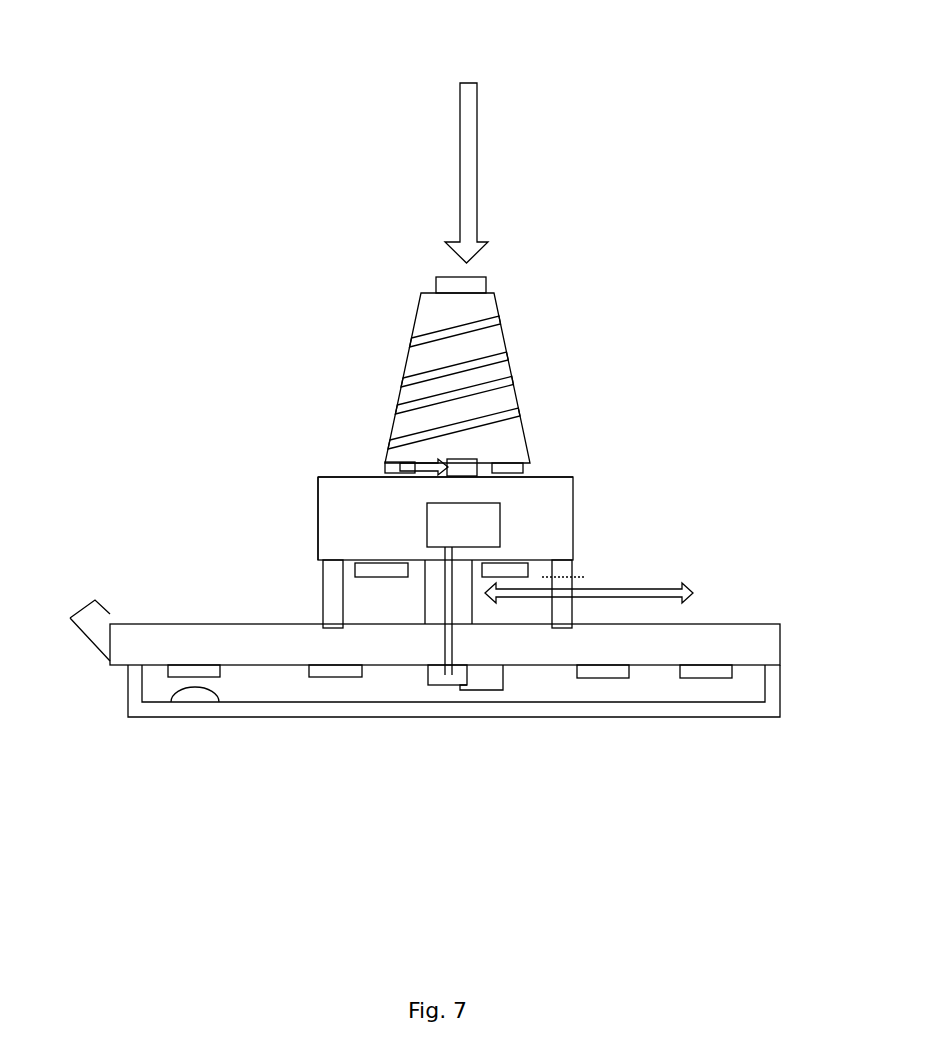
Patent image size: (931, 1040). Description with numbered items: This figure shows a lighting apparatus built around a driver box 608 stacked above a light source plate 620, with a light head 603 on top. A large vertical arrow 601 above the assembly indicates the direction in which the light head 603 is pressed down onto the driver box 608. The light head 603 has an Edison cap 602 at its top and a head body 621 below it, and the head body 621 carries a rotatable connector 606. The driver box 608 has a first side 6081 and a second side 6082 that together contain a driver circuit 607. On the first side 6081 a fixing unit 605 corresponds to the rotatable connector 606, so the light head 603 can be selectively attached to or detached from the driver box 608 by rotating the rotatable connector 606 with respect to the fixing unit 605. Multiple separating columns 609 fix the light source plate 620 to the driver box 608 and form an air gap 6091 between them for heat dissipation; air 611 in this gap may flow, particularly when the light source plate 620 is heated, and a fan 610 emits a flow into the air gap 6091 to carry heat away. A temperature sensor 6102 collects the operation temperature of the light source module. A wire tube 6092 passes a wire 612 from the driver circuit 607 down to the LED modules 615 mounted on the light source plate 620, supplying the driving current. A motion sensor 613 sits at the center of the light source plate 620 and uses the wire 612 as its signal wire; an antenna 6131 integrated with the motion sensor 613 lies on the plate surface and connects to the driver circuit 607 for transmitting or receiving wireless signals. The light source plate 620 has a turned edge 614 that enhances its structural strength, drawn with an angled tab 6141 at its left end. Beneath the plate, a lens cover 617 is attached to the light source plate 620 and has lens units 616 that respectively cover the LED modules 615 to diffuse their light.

The pressing force direction arrow 601 is at (477, 188).
The Edison cap 602 is at (492, 335).
The light head 603 is at (513, 432).
The head body 621 is at (458, 443).
The rotatable connector 606 is at (442, 477).
The fixing unit 605 is at (452, 475).
The driver circuit 607 is at (490, 525).
The driver box 608 is at (330, 485).
The first side 6081 is at (352, 505).
The second side 6082 is at (332, 562).
The wire 612 is at (450, 643).
The fan 610 is at (382, 568).
The temperature sensor 6102 is at (510, 568).
The separating columns 609 is at (335, 612).
The wire tube 6092 is at (433, 597).
The air gap 6091 is at (598, 562).
The air 611 is at (653, 592).
The turned edge 614 is at (137, 630).
The light source plate 620 is at (738, 642).
The inclined tab 6141 is at (88, 630).
The lens cover 617 is at (147, 710).
The lens units 616 is at (195, 702).
The LED modules 615 is at (197, 672).
The motion sensor 613 is at (425, 683).
The antenna 6131 is at (503, 677).